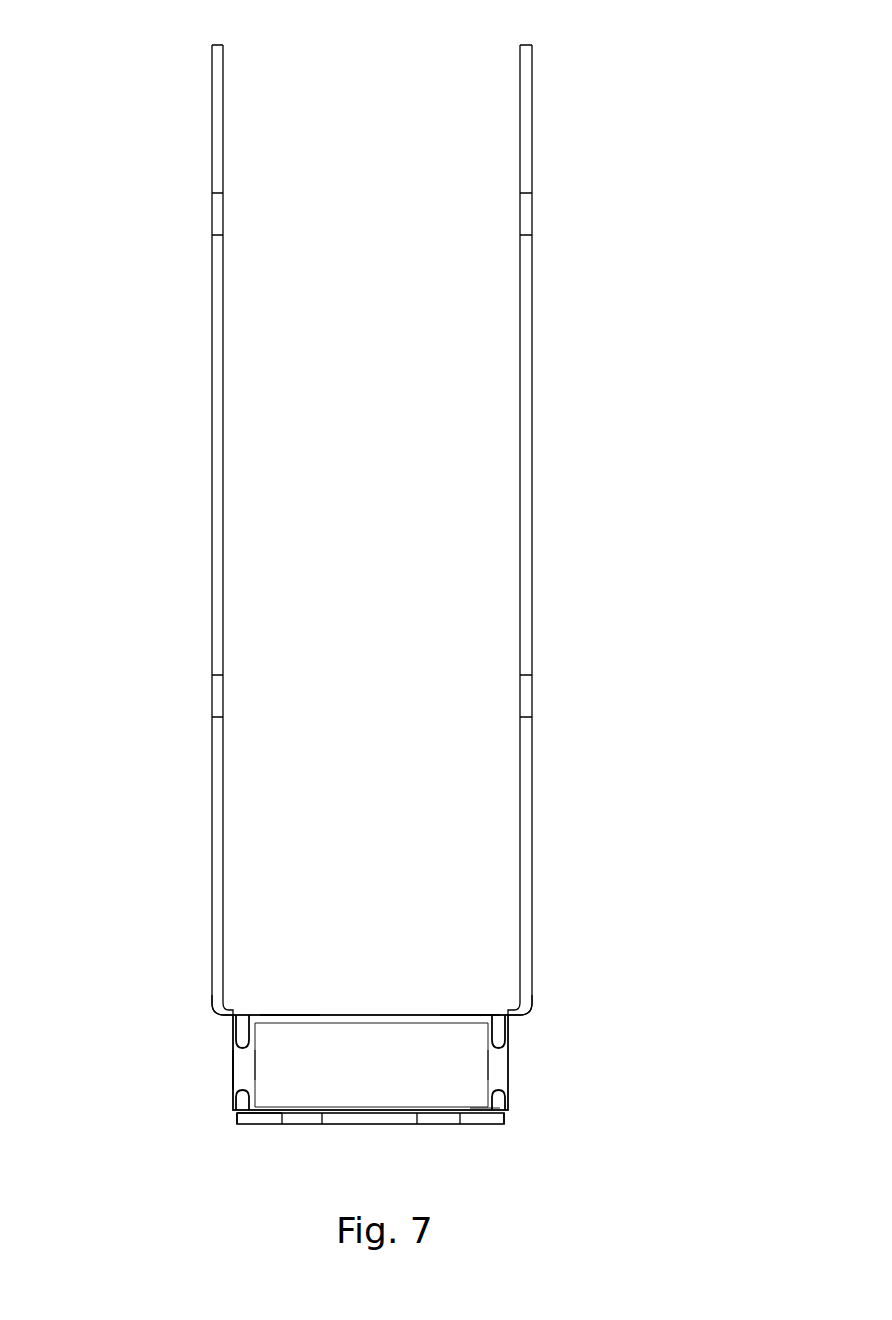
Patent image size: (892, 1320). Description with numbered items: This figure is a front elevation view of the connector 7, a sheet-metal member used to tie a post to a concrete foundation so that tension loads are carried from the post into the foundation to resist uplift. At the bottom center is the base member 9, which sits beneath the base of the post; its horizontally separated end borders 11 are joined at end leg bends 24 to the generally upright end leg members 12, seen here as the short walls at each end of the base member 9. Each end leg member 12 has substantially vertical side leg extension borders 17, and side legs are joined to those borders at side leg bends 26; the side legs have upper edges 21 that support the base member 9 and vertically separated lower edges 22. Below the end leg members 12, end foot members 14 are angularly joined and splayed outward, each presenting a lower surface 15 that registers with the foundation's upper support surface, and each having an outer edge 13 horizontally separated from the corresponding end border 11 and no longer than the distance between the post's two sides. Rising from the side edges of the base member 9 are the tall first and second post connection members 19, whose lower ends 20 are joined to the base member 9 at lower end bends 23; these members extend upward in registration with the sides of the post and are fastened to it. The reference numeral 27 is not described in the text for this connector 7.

The connector 7 is at (374, 623).
The base member 9 is at (472, 1015).
The end border 11 is at (320, 1015).
The end leg member 12 is at (238, 1070).
The outer edge 13 is at (365, 1125).
The end foot member 14 is at (477, 1098).
The lower surface 15 is at (254, 1125).
The side leg extension border 17 is at (238, 1078).
The post connection member 19 is at (512, 507).
The lower end 20 is at (215, 1010).
The upper edge 21 is at (240, 1010).
The lower edge 22 is at (236, 1125).
The lower end bend 23 is at (213, 1015).
The end leg bend 24 is at (285, 1015).
The side leg bend 26 is at (275, 1062).
The joint 27 is at (211, 223).